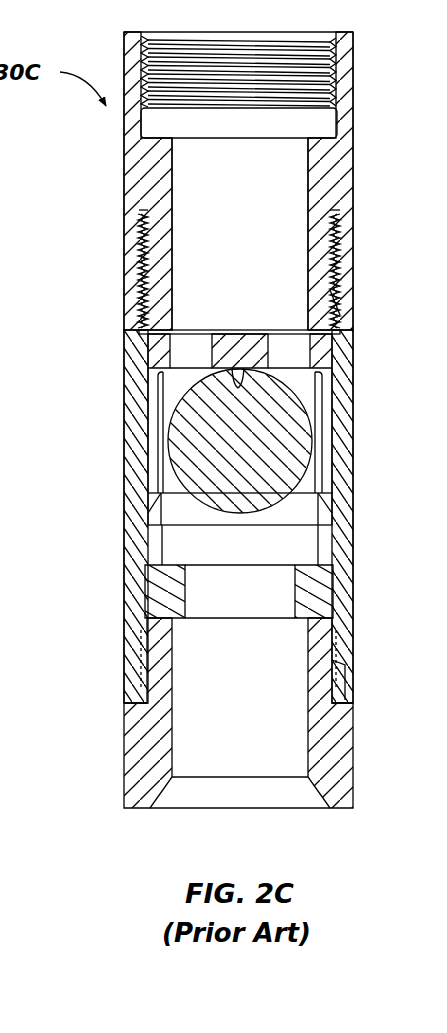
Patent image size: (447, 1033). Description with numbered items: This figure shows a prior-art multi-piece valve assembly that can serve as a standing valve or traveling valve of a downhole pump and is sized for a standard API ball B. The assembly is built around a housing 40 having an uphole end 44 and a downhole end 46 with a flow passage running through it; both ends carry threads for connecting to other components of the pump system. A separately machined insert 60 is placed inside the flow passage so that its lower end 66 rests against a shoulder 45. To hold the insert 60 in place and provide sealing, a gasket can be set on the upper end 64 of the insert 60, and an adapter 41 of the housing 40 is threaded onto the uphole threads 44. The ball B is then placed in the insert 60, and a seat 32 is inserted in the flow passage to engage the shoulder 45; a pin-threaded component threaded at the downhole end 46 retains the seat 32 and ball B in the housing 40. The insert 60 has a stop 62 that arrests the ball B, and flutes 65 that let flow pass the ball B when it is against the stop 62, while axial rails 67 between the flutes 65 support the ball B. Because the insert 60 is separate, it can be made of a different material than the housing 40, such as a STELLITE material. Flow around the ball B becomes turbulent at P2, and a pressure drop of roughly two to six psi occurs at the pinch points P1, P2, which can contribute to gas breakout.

The adapter 41 is at (353, 168).
The housing 40 is at (125, 273).
The uphole end 44 is at (340, 243).
The upper end 64 is at (325, 303).
The stop 62 is at (237, 387).
The insert 60 is at (314, 393).
The axial rails 67 is at (176, 392).
The flutes 65 is at (326, 468).
The ball B is at (178, 440).
The lower end 66 is at (185, 527).
The shoulder 45 is at (300, 547).
The seat 32 is at (330, 590).
The downhole end 46 is at (336, 660).
The pinch point P1 is at (300, 510).
The pinch point P2 is at (180, 382).